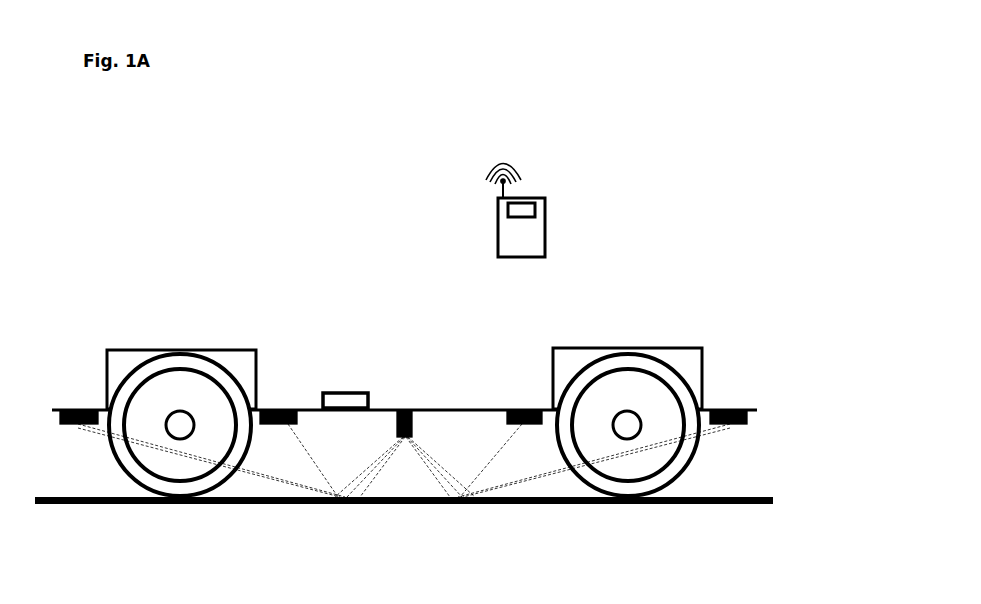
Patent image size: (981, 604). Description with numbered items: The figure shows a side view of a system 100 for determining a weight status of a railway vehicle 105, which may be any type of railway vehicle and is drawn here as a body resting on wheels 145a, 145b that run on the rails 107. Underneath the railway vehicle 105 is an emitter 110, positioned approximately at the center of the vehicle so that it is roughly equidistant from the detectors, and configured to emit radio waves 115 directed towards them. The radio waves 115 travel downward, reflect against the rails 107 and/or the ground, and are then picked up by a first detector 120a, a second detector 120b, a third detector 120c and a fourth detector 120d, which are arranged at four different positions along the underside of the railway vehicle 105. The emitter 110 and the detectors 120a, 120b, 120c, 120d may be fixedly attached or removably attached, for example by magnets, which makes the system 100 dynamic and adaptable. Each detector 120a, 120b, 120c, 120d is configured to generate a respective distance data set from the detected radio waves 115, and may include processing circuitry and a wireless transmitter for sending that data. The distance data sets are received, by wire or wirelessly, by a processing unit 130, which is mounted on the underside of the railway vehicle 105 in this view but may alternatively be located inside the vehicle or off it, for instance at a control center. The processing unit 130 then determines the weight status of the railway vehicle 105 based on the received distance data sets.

The system 100 is at (163, 198).
The railway vehicle 105 is at (253, 350).
The rails 107 is at (720, 505).
The emitter 110 is at (405, 410).
The radio waves 115 is at (437, 482).
The first detector 120a is at (70, 425).
The second detector 120b is at (286, 410).
The third detector 120c is at (533, 410).
The fourth detector 120d is at (743, 424).
The processing unit 130 is at (356, 393).
The wheel 145a is at (232, 480).
The wheel 145b is at (588, 489).